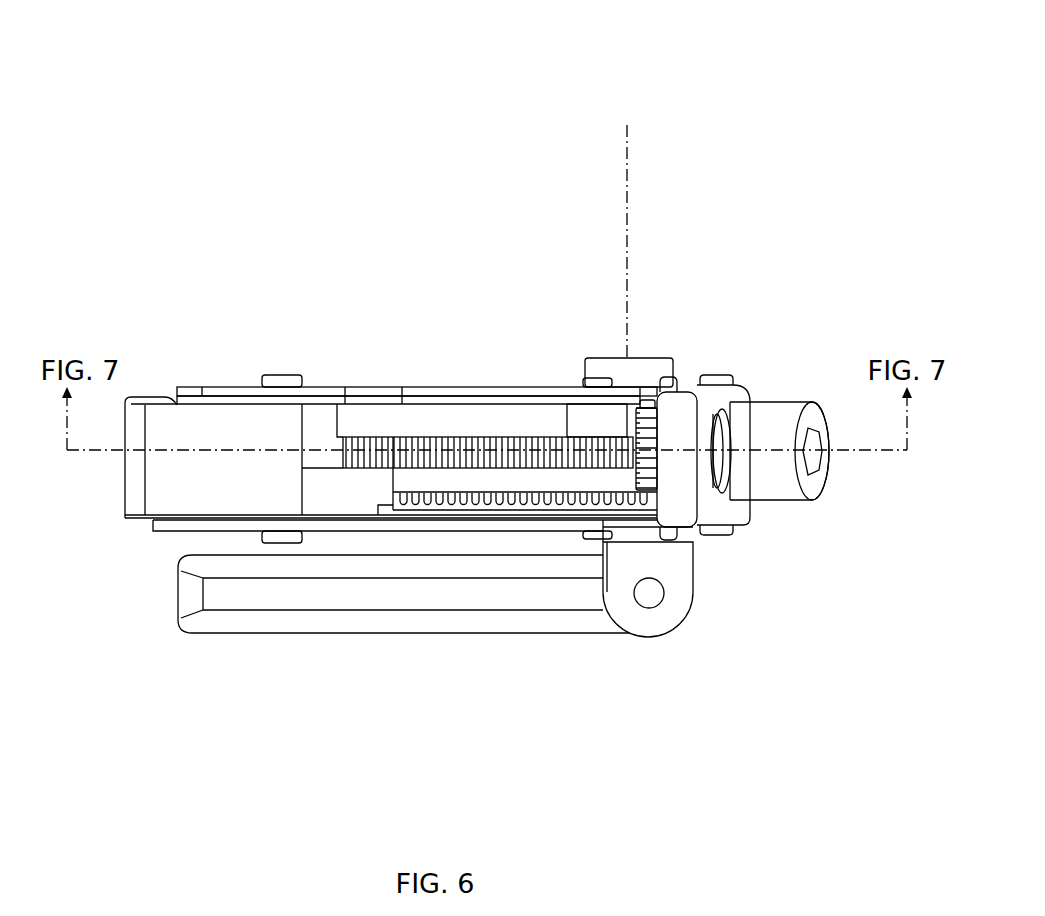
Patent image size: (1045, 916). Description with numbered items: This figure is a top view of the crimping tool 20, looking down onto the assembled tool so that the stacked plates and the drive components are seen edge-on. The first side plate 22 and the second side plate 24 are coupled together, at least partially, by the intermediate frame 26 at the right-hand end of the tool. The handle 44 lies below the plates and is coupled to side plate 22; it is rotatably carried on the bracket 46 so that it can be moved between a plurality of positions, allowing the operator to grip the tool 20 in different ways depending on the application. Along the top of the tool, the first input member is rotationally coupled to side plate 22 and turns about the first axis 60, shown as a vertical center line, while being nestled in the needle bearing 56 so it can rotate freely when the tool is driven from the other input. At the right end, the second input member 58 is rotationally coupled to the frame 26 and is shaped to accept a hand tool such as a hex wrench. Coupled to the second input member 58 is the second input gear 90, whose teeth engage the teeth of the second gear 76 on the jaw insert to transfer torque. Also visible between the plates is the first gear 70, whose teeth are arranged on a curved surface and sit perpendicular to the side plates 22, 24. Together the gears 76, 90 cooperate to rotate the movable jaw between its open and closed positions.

The crimping tool 20 is at (60, 86).
The first side plate 22 is at (460, 387).
The second side plate 24 is at (155, 522).
The intermediate frame 26 is at (750, 518).
The handle 44 is at (315, 633).
The bracket 46 is at (693, 610).
The needle bearing 56 is at (583, 368).
The second input member 58 is at (770, 403).
The first axis 60 is at (630, 163).
The first gear 70 is at (392, 437).
The second gear 76 is at (425, 484).
The second input gear 90 is at (673, 397).